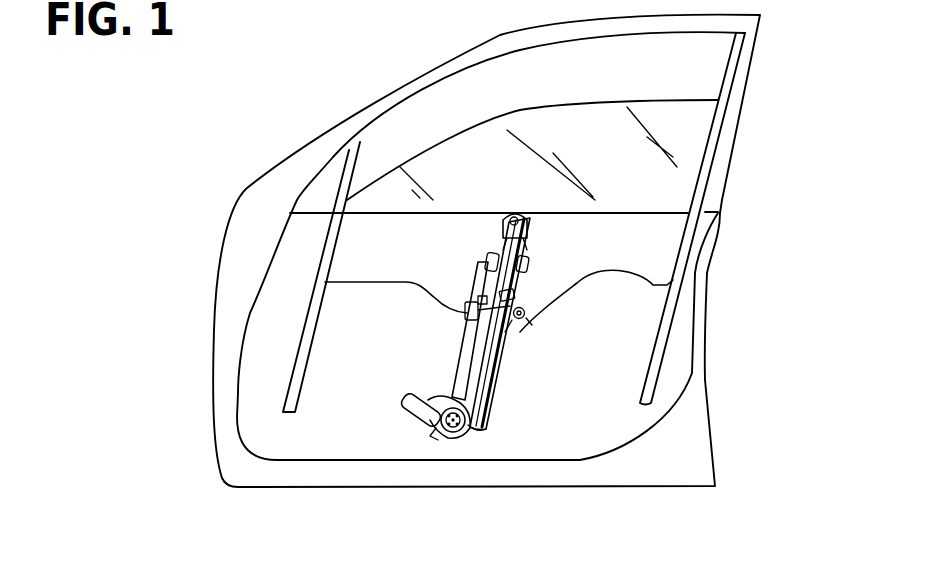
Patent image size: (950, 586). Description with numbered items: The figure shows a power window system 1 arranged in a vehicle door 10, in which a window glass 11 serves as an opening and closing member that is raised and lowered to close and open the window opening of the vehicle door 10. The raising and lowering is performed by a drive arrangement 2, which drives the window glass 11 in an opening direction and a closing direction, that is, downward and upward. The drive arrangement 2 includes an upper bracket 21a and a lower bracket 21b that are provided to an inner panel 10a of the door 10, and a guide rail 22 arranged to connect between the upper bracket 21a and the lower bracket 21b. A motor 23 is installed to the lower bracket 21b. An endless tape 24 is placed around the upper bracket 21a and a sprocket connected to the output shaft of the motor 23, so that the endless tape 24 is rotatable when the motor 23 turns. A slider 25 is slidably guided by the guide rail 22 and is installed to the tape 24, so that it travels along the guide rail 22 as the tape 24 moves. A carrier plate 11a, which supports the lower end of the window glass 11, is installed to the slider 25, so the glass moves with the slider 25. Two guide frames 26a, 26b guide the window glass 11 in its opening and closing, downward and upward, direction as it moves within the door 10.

The power window system 1 is at (370, 87).
The drive arrangement 2 is at (487, 384).
The vehicle door 10 is at (697, 437).
The inner panel 10a is at (618, 433).
The window glass 11 is at (693, 137).
The carrier plate 11a is at (517, 310).
The upper bracket 21a is at (500, 230).
The lower bracket 21b is at (450, 400).
The guide rail 22 is at (500, 373).
The motor 23 is at (413, 417).
The endless tape 24 is at (463, 350).
The slider 25 is at (522, 320).
The guide frame 26a is at (283, 412).
The guide frame 26b is at (667, 343).